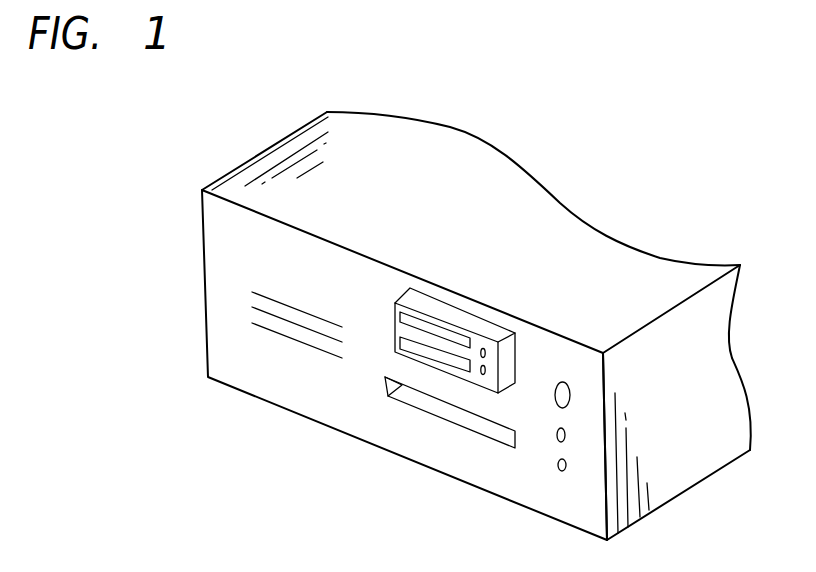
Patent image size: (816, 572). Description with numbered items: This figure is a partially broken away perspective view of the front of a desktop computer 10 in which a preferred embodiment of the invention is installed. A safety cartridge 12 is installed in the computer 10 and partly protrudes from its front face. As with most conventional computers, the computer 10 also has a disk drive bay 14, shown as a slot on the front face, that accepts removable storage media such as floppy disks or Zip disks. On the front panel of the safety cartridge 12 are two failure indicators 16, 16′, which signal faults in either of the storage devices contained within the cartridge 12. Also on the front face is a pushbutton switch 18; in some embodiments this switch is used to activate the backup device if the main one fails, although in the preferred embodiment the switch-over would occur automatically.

The desktop computer 10 is at (548, 157).
The safety cartridge 12 is at (505, 358).
The disk drive bay 14 is at (288, 358).
The failure indicator 16 is at (483, 347).
The failure indicator 16′ is at (482, 375).
The pushbutton switch 18 is at (488, 430).